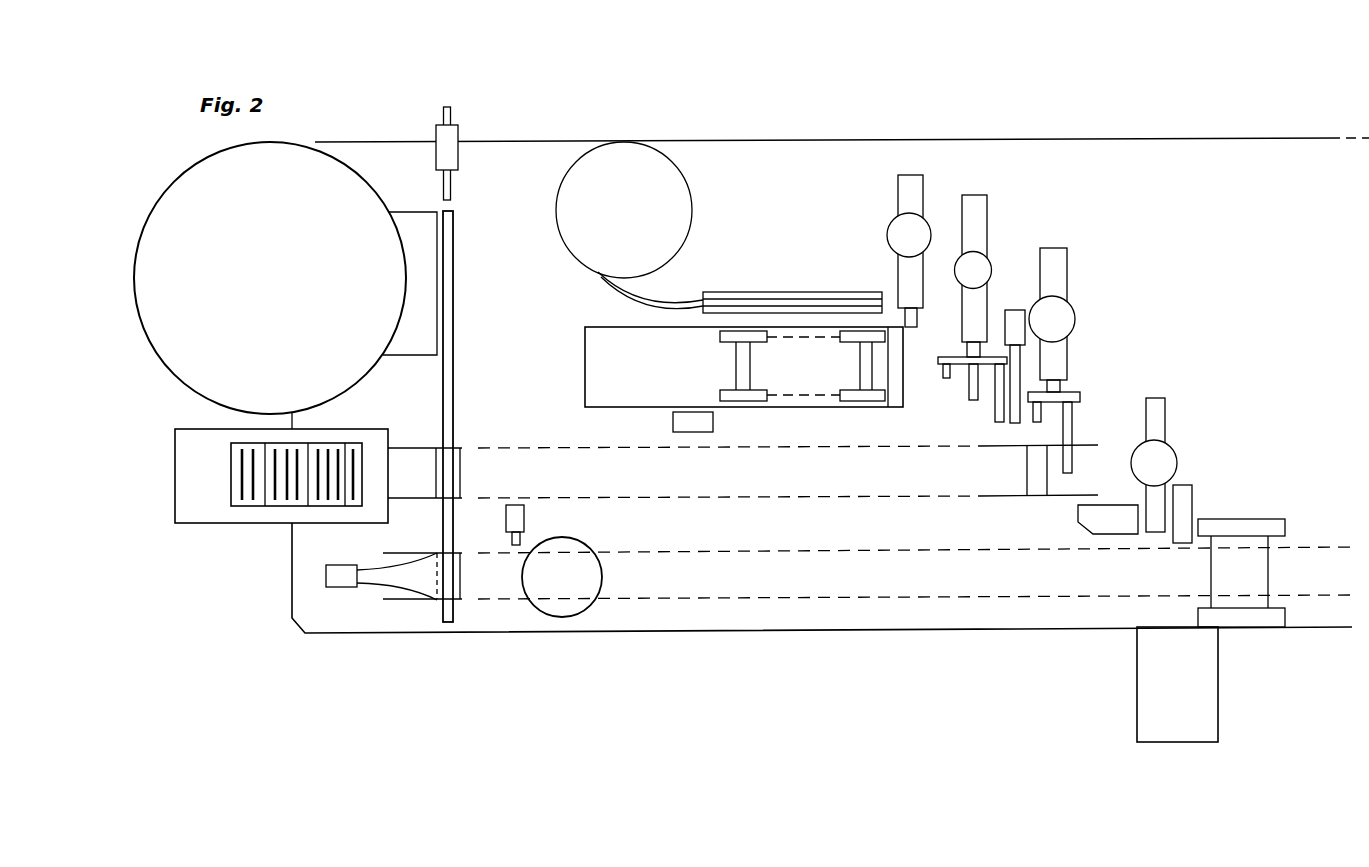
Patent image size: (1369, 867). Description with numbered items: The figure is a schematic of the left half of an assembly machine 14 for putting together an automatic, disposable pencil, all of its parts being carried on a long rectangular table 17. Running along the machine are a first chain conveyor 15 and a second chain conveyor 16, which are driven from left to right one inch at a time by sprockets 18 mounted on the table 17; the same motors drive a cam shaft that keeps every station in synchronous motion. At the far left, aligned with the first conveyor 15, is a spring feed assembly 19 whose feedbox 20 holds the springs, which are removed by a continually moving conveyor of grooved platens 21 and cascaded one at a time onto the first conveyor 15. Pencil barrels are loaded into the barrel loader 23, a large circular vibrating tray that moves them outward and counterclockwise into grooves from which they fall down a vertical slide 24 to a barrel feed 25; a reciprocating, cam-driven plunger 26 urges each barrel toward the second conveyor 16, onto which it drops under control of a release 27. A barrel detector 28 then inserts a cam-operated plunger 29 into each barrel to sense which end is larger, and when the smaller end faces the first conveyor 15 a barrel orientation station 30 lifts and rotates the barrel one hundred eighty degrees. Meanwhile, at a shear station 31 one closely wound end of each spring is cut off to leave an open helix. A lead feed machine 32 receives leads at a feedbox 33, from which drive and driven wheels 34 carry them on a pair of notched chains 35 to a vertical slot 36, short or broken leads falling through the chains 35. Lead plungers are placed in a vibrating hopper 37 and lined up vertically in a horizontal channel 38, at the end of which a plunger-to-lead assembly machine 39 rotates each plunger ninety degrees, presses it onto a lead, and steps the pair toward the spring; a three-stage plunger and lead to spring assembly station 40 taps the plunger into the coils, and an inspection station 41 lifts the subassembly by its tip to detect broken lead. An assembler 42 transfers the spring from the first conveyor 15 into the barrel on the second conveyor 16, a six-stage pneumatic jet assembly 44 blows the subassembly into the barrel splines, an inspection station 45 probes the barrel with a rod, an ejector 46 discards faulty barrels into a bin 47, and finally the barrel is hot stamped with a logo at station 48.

The assembly machine 14 is at (588, 132).
The first chain conveyor 15 is at (808, 499).
The second chain conveyor 16 is at (878, 601).
The table 17 is at (1026, 629).
The sprockets 18 is at (405, 498).
The spring feed assembly 19 is at (195, 436).
The feedbox 20 is at (207, 518).
The platens 21 is at (250, 507).
The barrel loader 23 is at (256, 290).
The vertical slide 24 is at (430, 275).
The barrel feed 25 is at (453, 395).
The plunger 26 is at (452, 137).
The release 27 is at (325, 578).
The barrel detector 28 is at (525, 514).
The plunger 29 is at (512, 540).
The barrel orientation station 30 is at (558, 618).
The shear station 31 is at (673, 421).
The lead feed machine 32 is at (605, 327).
The feedbox 33 is at (626, 376).
The drive and driven wheels 34 is at (858, 398).
The notched chains 35 is at (818, 338).
The vertical slot 36 is at (903, 384).
The hopper 37 is at (681, 191).
The horizontal channel 38 is at (794, 293).
The plunger-to-lead assembly machine 39 is at (905, 193).
The plunger and lead to spring assembly station 40 is at (981, 212).
The inspection station 41 is at (1015, 317).
The assembler 42 is at (1061, 283).
The pneumatic jet assembly 44 is at (1120, 508).
The inspection station 45 is at (1165, 408).
The ejector 46 is at (1183, 490).
The bin 47 is at (1150, 688).
The hot stamp station 48 is at (1239, 517).